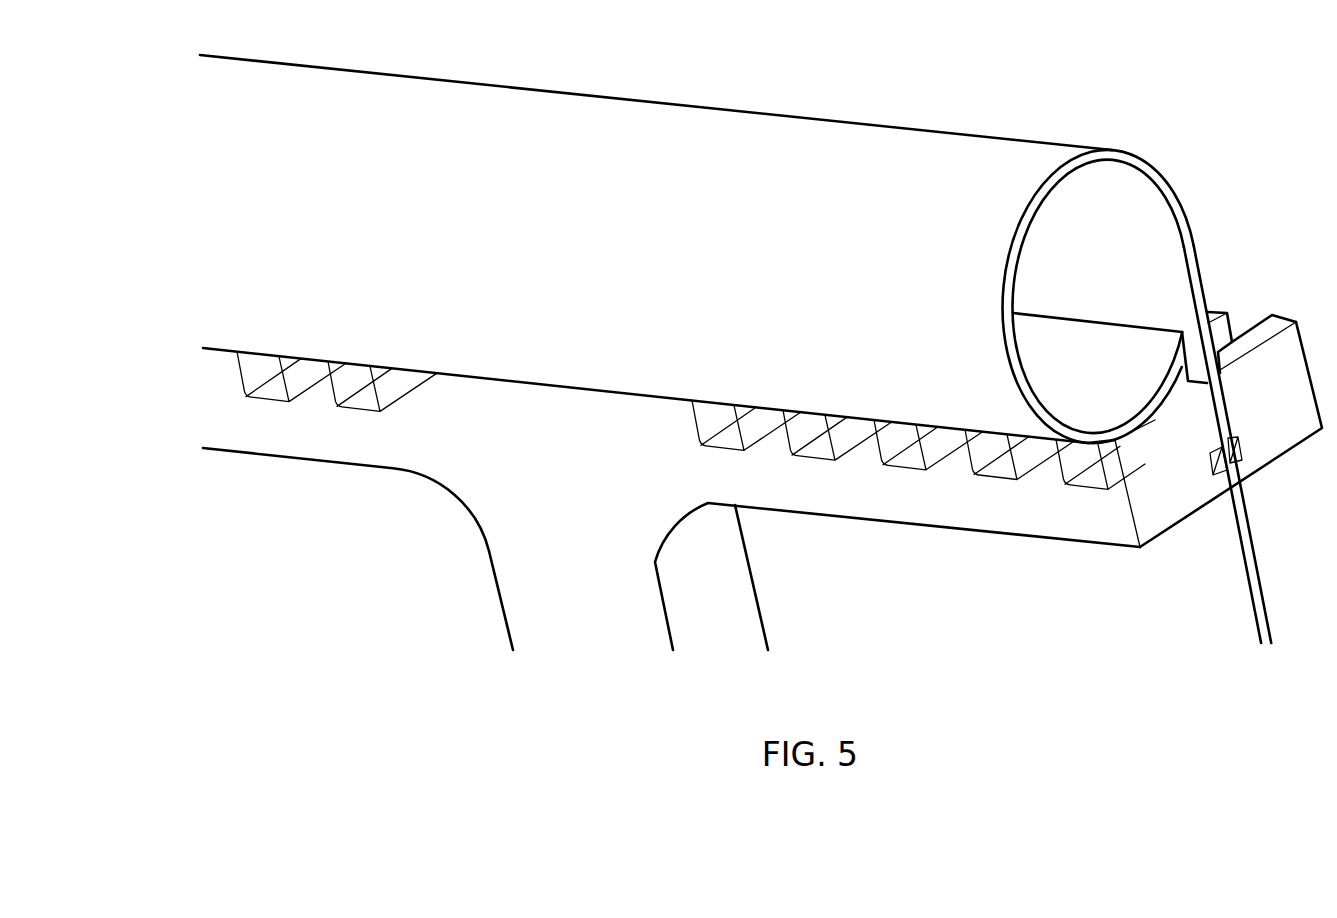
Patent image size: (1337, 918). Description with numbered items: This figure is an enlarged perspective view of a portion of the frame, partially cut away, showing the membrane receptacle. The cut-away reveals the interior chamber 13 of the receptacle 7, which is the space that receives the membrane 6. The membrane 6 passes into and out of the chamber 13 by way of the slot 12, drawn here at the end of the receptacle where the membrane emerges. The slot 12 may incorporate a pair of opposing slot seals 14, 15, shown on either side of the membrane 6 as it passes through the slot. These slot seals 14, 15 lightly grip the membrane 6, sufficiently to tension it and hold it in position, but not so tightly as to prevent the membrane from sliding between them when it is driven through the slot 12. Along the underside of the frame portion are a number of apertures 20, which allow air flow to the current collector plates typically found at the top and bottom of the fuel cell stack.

The first receptacle 7 is at (845, 137).
The interior chamber 13 is at (1152, 250).
The apertures 20 is at (802, 425).
The slot 12 is at (1213, 415).
The membrane 6 is at (1257, 592).
The slot seal 14 is at (1237, 455).
The slot seal 15 is at (1213, 472).